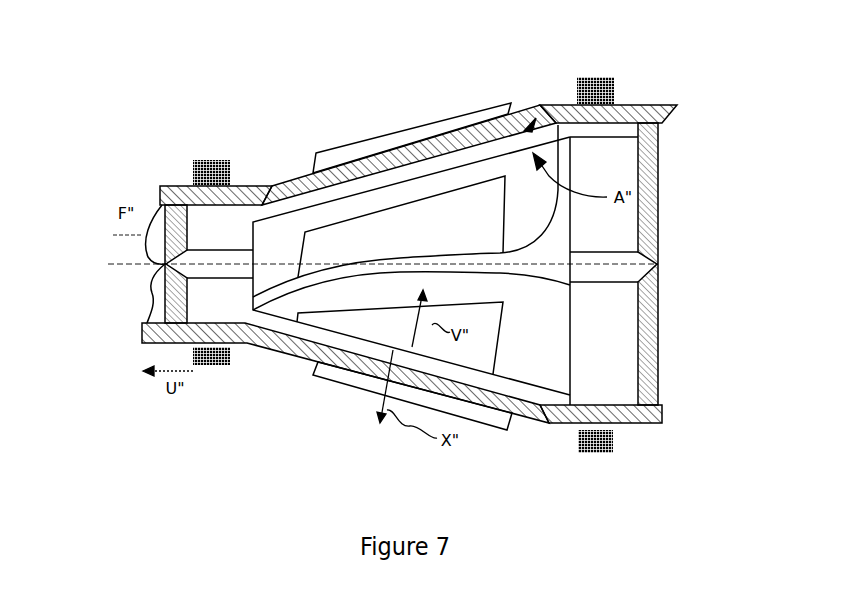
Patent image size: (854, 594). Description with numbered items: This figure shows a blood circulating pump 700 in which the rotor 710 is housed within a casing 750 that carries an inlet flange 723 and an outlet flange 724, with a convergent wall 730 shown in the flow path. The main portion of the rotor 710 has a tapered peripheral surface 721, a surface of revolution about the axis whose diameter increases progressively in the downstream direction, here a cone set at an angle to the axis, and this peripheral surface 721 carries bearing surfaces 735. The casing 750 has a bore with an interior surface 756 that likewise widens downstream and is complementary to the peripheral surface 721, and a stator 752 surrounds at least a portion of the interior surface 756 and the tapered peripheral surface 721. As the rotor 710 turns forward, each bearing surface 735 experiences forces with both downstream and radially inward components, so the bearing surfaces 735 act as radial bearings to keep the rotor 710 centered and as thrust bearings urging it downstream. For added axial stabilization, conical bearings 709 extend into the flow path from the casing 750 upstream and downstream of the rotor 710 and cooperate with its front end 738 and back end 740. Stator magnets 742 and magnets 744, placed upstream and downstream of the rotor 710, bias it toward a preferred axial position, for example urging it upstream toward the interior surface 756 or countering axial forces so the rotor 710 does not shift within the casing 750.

The blood circulating pump 700 is at (282, 124).
The conical bearings 709 is at (190, 218).
The rotor 710 is at (558, 125).
The tapered peripheral surface 721 is at (527, 127).
The inlet flange 723 is at (268, 183).
The outlet flange 724 is at (613, 104).
The convergent wall 730 is at (298, 220).
The bearing surfaces 735 is at (402, 217).
The front end 738 is at (141, 263).
The back end 740 is at (597, 272).
The stator magnets 742 is at (210, 160).
The magnets 744 is at (614, 78).
The casing 750 is at (540, 412).
The stator 752 is at (457, 130).
The interior surface 756 is at (245, 343).